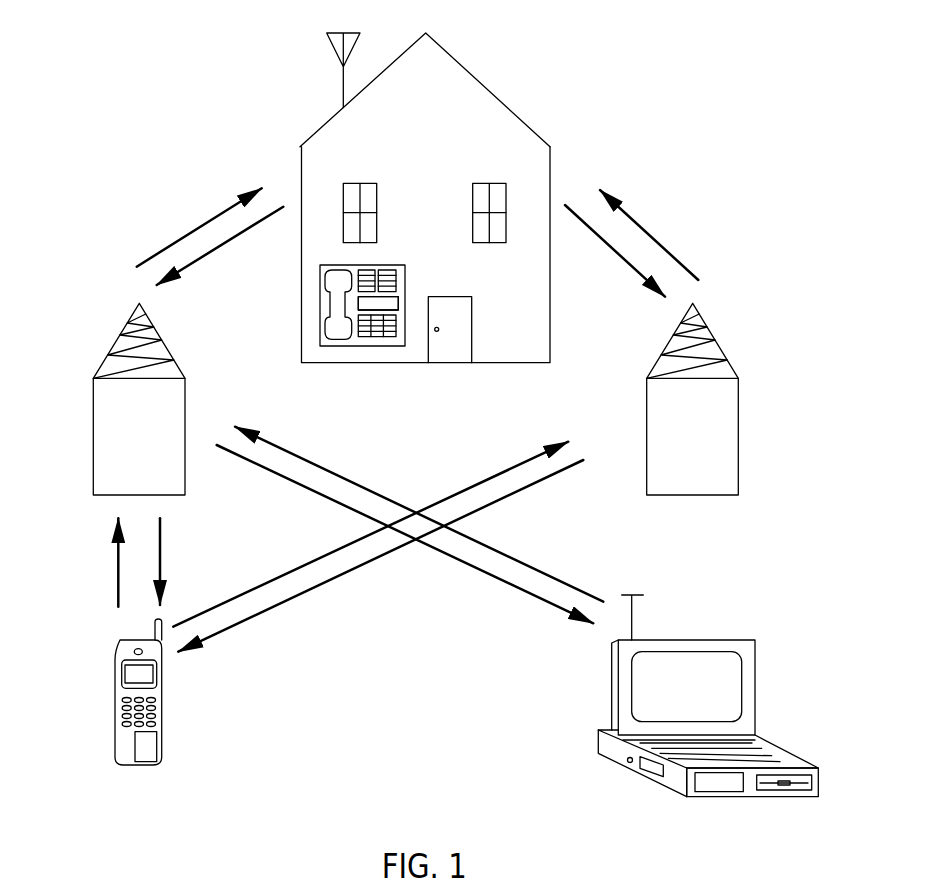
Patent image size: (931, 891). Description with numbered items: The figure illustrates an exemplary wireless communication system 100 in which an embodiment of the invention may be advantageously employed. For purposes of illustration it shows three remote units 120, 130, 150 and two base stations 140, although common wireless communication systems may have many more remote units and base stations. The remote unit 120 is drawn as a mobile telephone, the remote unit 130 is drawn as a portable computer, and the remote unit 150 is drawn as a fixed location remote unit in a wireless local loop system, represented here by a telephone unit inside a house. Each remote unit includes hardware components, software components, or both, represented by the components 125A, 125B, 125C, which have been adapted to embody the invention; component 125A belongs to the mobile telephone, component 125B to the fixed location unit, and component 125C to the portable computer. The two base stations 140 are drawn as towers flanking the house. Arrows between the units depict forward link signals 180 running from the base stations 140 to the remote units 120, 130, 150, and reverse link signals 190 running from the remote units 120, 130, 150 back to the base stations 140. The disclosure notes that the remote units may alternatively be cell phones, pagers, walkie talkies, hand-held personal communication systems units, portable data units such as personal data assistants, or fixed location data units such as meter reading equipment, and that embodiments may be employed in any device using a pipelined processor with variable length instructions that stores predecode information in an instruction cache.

The wireless communication system 100 is at (158, 72).
The remote unit 120 is at (118, 650).
The component 125A is at (148, 750).
The component 125B is at (387, 304).
The component 125C is at (725, 782).
The remote unit 130 is at (733, 640).
The base station 140 is at (118, 338).
The remote unit 150 is at (318, 315).
The forward link signals 180 is at (205, 223).
The reverse link signals 190 is at (208, 252).